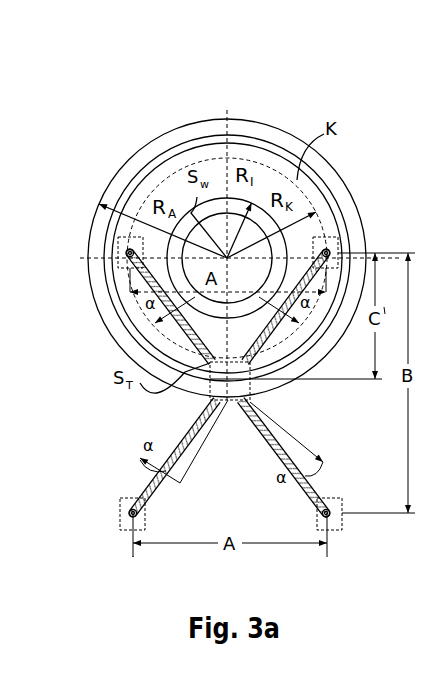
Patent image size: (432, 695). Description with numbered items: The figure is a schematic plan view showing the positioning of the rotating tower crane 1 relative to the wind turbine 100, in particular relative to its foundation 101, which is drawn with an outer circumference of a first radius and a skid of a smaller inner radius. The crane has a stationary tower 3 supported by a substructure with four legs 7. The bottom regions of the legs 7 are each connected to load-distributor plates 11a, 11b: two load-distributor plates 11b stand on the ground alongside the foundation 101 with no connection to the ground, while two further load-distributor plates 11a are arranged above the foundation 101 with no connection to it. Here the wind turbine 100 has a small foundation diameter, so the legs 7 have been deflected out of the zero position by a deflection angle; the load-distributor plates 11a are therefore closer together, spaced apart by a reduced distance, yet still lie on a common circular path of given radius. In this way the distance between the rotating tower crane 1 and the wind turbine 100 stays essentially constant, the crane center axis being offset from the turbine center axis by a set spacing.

The wind turbine 100 is at (124, 133).
The foundation 101 is at (270, 118).
The rotating tower crane 1 is at (112, 478).
The tower 3 is at (252, 390).
The legs 7 is at (120, 268).
The load-distributor plates 11a is at (118, 238).
The load-distributor plates 11b is at (125, 530).